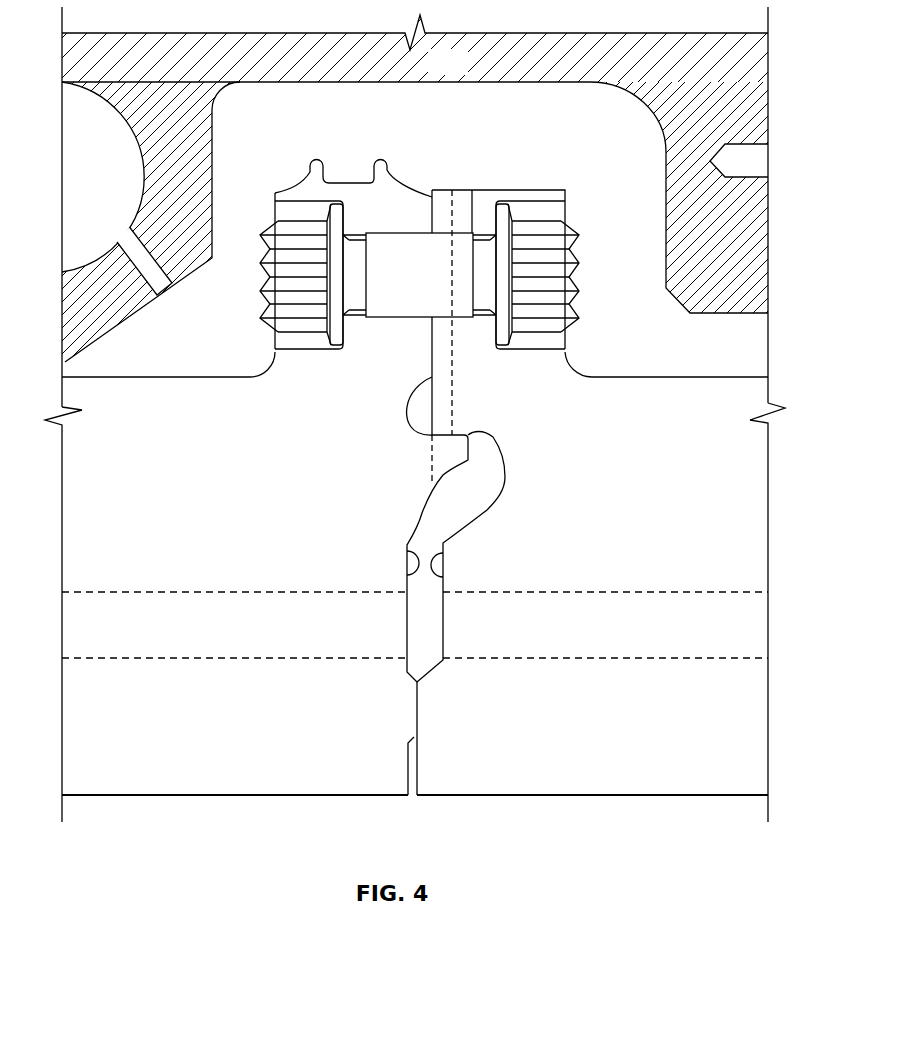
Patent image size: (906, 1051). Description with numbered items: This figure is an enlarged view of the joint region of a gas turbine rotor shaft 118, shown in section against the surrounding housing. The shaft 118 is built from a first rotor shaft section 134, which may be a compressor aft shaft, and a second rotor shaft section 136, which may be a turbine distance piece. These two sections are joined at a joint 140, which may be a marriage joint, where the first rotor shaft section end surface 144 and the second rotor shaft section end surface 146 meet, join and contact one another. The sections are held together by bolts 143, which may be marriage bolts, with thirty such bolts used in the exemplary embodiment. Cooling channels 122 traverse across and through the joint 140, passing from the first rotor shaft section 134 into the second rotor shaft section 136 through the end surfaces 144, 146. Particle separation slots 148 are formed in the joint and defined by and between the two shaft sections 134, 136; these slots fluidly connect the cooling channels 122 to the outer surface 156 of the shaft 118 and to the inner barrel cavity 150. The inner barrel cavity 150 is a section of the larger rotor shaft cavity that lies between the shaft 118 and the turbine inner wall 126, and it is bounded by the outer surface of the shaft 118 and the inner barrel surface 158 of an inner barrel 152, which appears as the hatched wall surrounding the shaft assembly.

The shaft 118 is at (541, 807).
The cooling channels 122 is at (601, 591).
The turbine inner wall 126 is at (734, 314).
The first rotor shaft section 134 is at (330, 777).
The second rotor shaft section 136 is at (465, 777).
The joint 140 is at (417, 705).
The bolts 143 is at (390, 230).
The first rotor shaft section end surface 144 is at (411, 558).
The second rotor shaft section end surface 146 is at (440, 559).
The particle separation slots 148 is at (477, 503).
The inner barrel cavity 150 is at (432, 127).
The inner barrel 152 is at (466, 72).
The outer surface 156 is at (524, 186).
The inner barrel surface 158 is at (518, 83).